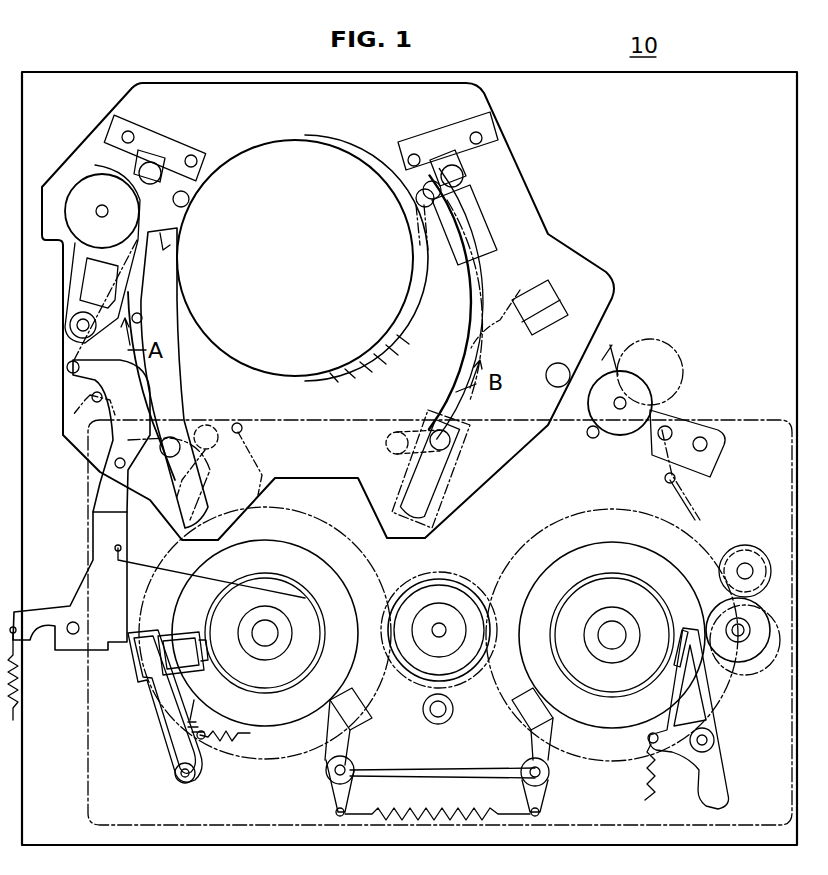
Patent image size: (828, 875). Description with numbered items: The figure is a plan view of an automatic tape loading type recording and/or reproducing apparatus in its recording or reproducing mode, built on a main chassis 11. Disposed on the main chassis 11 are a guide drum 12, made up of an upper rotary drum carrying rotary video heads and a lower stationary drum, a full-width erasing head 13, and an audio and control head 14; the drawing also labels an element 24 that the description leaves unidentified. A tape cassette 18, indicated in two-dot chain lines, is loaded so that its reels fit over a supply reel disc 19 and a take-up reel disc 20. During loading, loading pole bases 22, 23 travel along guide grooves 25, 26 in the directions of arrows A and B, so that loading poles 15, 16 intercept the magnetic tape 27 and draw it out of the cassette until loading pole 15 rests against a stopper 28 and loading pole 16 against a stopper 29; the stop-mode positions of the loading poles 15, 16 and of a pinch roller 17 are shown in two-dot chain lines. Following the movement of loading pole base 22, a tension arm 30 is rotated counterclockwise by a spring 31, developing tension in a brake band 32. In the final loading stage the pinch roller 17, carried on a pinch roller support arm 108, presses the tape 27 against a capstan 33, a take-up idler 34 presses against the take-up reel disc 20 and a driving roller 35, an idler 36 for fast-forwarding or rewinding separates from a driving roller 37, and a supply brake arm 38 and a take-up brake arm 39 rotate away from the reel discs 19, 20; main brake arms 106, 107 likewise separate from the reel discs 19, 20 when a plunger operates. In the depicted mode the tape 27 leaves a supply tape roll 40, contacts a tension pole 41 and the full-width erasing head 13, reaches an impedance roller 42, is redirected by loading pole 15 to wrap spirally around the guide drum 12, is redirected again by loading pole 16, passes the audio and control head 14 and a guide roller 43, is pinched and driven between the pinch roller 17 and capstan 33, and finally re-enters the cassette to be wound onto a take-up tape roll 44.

The main chassis 11 is at (705, 78).
The guide drum 12 is at (280, 142).
The full-width erasing head 13 is at (85, 278).
The audio and control head 14 is at (548, 292).
The loading pole 15 is at (168, 155).
The loading pole 16 is at (445, 160).
The pinch roller 17 is at (627, 356).
The tape cassette 18 is at (745, 420).
The supply reel disc 19 is at (330, 575).
The take-up reel disc 20 is at (566, 555).
The loading pole base 22 is at (162, 245).
The loading pole base 23 is at (452, 248).
The chassis plate 24 is at (540, 236).
The guide groove 25 is at (142, 321).
The guide groove 26 is at (470, 333).
The magnetic tape 27 is at (70, 400).
The stopper 28 is at (158, 125).
The stopper 29 is at (425, 140).
The tension arm 30 is at (284, 470).
The spring 31 is at (20, 690).
The brake band 32 is at (238, 568).
The capstan 33 is at (593, 438).
The take-up idler 34 is at (750, 668).
The driving roller 35 is at (748, 545).
The idler 36 is at (455, 582).
The driving roller 37 is at (454, 710).
The supply brake arm 38 is at (140, 694).
The take-up brake arm 39 is at (712, 708).
The supply tape roll 40 is at (258, 780).
The tension pole 41 is at (67, 367).
The impedance roller 42 is at (75, 182).
The guide roller 43 is at (550, 382).
The take-up tape roll 44 is at (658, 522).
The main brake arm 106 is at (355, 752).
The main brake arm 107 is at (548, 770).
The pinch roller support arm 108 is at (685, 412).